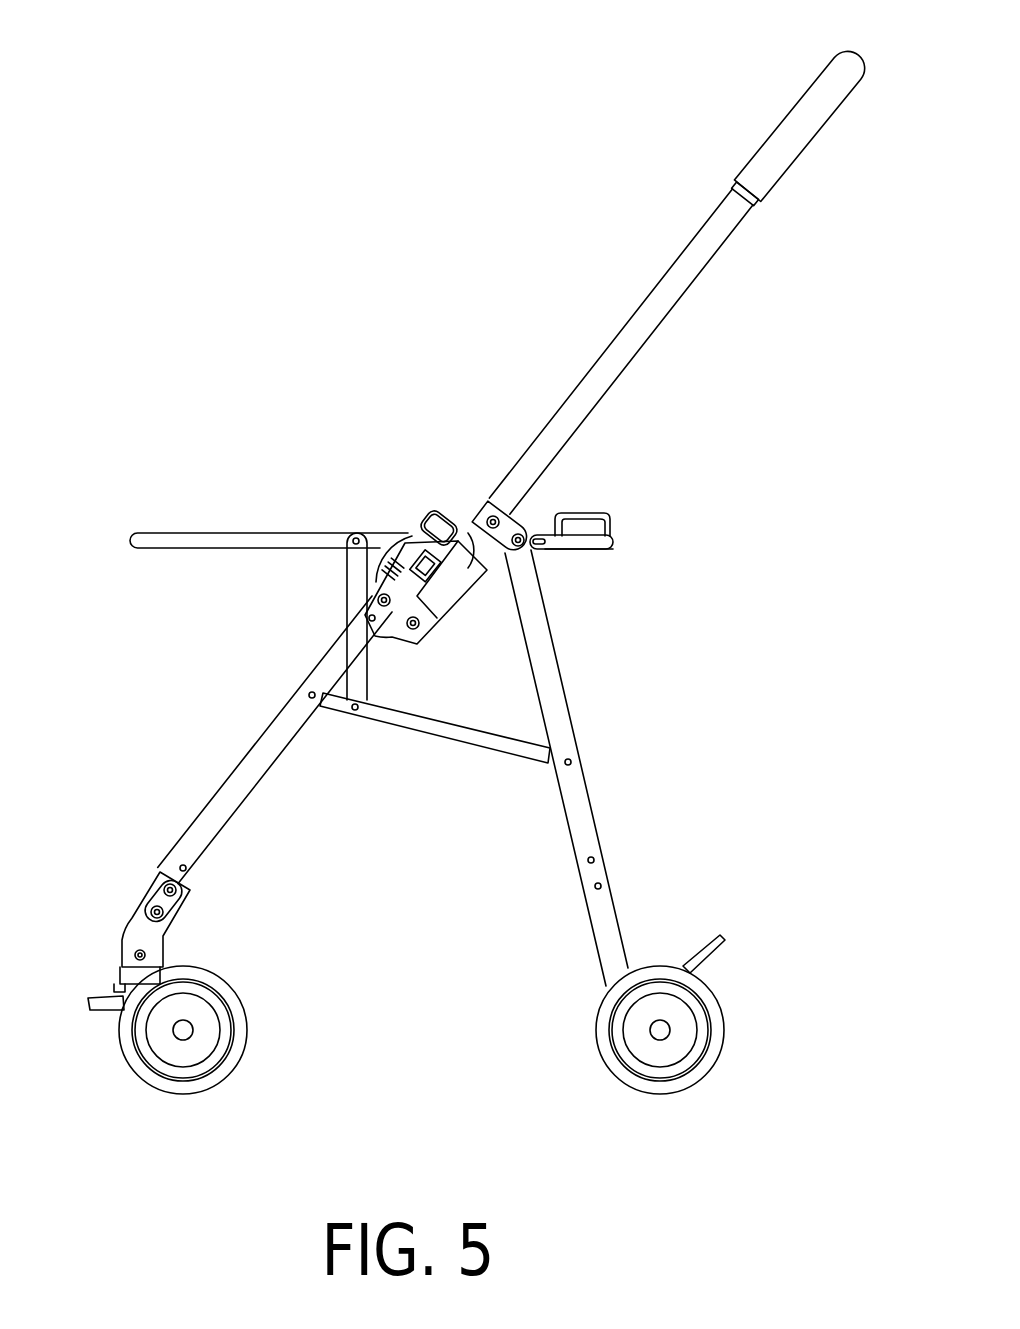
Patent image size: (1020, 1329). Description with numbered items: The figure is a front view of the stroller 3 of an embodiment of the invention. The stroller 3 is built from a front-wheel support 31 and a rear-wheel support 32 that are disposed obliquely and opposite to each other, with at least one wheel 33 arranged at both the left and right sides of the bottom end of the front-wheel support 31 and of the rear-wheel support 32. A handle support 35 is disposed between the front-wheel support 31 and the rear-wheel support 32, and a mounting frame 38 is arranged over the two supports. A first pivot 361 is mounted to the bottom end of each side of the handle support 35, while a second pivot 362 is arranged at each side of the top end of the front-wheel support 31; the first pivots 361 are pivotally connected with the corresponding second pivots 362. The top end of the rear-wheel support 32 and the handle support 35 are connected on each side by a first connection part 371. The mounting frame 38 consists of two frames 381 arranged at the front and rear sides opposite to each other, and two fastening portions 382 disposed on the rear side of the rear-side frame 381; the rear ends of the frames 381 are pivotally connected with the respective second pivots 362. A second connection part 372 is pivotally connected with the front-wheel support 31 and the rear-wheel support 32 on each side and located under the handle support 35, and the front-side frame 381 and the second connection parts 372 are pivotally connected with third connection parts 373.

The stroller 3 is at (597, 298).
The front-wheel support 31 is at (222, 795).
The rear-wheel support 32 is at (592, 832).
The wheel 33 is at (130, 1047).
The handle support 35 is at (815, 103).
The first pivot 361 is at (381, 590).
The second pivot 362 is at (466, 556).
The first connection part 371 is at (532, 510).
The second connection part 372 is at (457, 735).
The third connection part 373 is at (355, 587).
The mounting frame 38 is at (587, 577).
The frame 381 is at (150, 536).
The fastening portion 382 is at (611, 522).